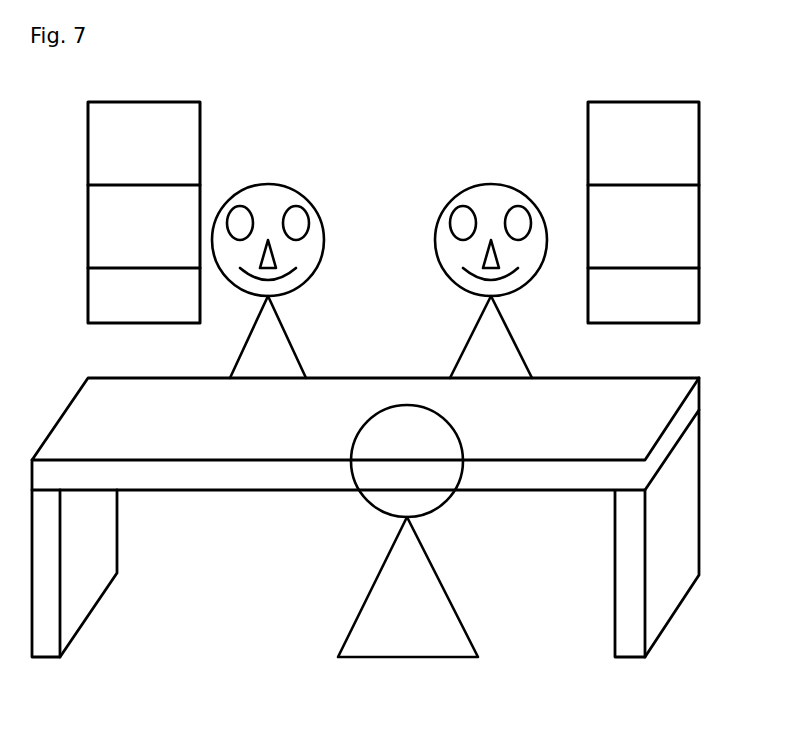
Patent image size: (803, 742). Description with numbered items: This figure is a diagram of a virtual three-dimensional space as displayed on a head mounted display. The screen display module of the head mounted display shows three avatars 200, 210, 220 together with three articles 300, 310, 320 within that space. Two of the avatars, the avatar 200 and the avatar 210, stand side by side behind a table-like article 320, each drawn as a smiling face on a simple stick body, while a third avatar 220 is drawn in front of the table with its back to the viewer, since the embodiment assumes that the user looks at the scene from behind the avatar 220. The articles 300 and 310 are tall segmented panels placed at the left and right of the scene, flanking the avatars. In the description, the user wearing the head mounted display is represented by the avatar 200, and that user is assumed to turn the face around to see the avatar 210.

The article 300 is at (189, 132).
The article 310 is at (685, 132).
The article 320 is at (683, 388).
The avatar 200 is at (277, 200).
The avatar 210 is at (505, 200).
The avatar 220 is at (445, 465).